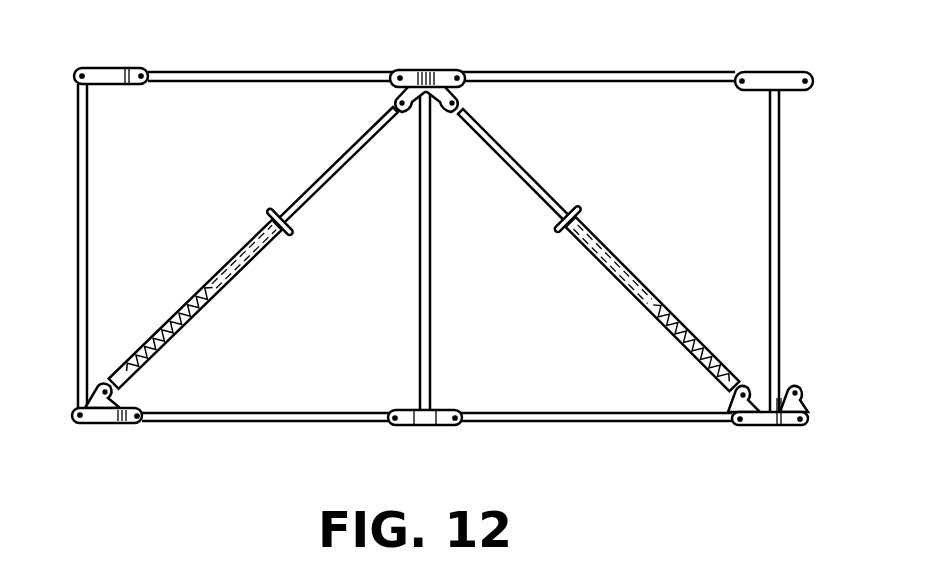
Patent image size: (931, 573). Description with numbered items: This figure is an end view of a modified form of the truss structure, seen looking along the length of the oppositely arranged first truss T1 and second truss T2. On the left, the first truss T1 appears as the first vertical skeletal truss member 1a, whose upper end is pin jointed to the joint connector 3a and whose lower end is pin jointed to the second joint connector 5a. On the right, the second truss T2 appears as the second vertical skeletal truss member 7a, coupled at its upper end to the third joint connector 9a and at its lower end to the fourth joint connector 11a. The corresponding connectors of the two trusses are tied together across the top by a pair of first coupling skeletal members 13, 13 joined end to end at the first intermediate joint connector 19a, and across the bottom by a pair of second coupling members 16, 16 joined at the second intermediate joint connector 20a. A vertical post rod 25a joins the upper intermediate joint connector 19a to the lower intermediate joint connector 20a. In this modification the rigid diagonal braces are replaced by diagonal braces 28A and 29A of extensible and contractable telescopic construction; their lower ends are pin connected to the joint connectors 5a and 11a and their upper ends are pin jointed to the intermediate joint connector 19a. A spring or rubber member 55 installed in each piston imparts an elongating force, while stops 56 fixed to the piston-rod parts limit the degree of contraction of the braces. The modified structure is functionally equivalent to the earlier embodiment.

The first vertical skeletal truss member 1a is at (77, 303).
The joint connector 3a is at (113, 72).
The second joint connector 5a is at (110, 424).
The second vertical skeletal truss member 7a is at (780, 312).
The third joint connector 9a is at (770, 75).
The fourth joint connector 11a is at (768, 426).
The first coupling skeletal member 13 is at (228, 83).
The second coupling member 16 is at (284, 423).
The first intermediate joint connector 19a is at (432, 72).
The second intermediate joint connector 20a is at (440, 410).
The vertical post rod 25a is at (431, 294).
The diagonal brace 28A is at (186, 296).
The diagonal brace 29A is at (670, 298).
The spring or rubber member 55 is at (178, 346).
The stop 56 is at (300, 232).
The first truss T1 is at (78, 198).
The second truss T2 is at (780, 210).